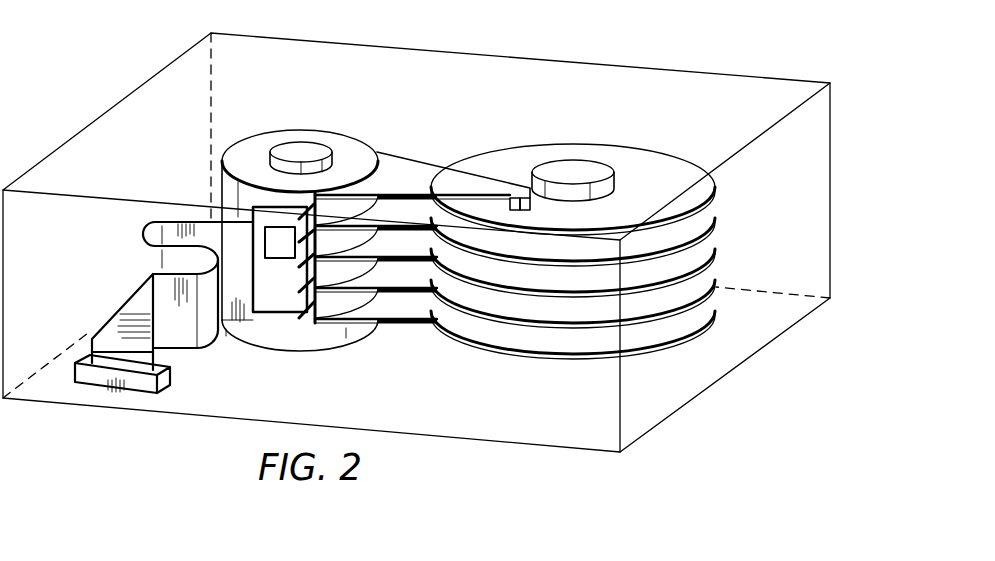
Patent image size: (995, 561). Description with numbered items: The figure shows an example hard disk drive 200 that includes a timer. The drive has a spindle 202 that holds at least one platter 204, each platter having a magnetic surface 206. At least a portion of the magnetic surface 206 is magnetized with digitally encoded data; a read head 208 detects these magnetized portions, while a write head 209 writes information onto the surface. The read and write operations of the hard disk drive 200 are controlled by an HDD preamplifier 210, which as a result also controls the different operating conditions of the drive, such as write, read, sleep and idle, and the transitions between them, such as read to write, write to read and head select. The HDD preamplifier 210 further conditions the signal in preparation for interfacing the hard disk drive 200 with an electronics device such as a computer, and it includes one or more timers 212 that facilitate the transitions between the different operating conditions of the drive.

The hard disk drive 200 is at (86, 62).
The spindle 202 is at (573, 162).
The platter 204 is at (648, 150).
The magnetic surface 206 is at (608, 230).
The read head 208 is at (524, 198).
The write head 209 is at (512, 198).
The HDD preamplifier 210 is at (273, 300).
The timer 212 is at (275, 227).